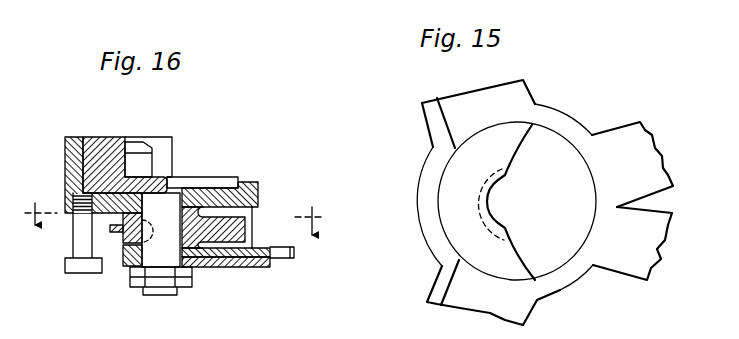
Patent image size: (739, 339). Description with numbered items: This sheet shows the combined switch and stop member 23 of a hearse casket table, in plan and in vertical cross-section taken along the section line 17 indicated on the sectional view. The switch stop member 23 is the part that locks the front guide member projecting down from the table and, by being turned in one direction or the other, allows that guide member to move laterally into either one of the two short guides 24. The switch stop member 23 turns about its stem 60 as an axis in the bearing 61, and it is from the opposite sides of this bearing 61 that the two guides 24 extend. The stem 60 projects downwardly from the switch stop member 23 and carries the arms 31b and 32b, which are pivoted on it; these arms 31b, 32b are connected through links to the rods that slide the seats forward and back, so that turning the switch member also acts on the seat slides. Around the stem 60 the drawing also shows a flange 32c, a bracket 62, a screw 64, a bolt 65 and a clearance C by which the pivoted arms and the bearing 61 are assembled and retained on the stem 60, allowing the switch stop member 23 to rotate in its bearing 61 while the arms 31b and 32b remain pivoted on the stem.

In FIG. 16, the rear door 17 is at (175, 216).
In FIG. 16, the switch stop member 23 is at (98, 137).
In FIG. 15, the switch stop member 23 is at (501, 202).
In FIG. 15, the guides 24 is at (460, 290).
In FIG. 16, the arm 31b is at (256, 268).
In FIG. 15, the arm 31b is at (621, 270).
In FIG. 16, the arm 32b is at (291, 247).
In FIG. 15, the arm 32b is at (631, 129).
In FIG. 16, the flange 32c is at (247, 231).
In FIG. 16, the stem 60 is at (161, 244).
In FIG. 16, the bearing 61 is at (65, 165).
In FIG. 15, the bearing 61 is at (429, 157).
In FIG. 16, the bracket 62 is at (123, 243).
In FIG. 16, the clamping screw 64 is at (76, 246).
In FIG. 16, the bolt 65 is at (131, 141).
In FIG. 15, the bolt 65 is at (477, 188).
In FIG. 16, the clearance C is at (232, 242).